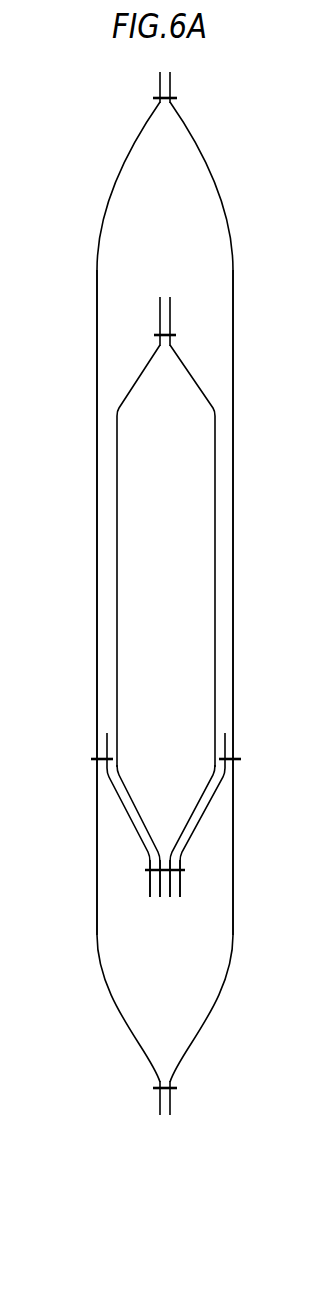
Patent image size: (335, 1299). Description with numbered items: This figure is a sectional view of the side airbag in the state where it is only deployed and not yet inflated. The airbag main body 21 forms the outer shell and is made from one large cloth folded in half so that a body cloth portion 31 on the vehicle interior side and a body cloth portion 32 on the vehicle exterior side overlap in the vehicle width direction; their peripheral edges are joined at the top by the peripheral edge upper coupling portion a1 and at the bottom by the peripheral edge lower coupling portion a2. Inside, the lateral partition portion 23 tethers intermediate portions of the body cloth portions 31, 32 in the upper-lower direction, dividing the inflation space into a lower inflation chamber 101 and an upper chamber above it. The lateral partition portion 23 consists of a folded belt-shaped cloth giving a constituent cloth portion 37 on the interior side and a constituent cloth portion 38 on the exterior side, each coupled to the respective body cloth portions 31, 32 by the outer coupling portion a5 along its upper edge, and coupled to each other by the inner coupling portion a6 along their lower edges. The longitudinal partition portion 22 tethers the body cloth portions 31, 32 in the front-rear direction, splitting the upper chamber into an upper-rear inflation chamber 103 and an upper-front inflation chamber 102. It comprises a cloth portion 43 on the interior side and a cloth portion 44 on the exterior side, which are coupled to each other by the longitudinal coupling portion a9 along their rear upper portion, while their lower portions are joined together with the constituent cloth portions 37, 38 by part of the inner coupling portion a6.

The peripheral edge upper coupling portion a1 is at (155, 98).
The peripheral edge lower coupling portion a2 is at (155, 1090).
The outer coupling portion a5 is at (95, 759).
The inner coupling portion a6 is at (147, 873).
The longitudinal coupling portion a9 is at (157, 334).
The airbag main body 21 is at (121, 162).
The longitudinal partition portion 22 is at (115, 443).
The lateral partition portion 23 is at (138, 832).
The body cloth portion 31 is at (100, 223).
The body cloth portion 32 is at (229, 208).
The constituent cloth portion 37 is at (123, 805).
The constituent cloth portion 38 is at (205, 813).
The cloth portion 43 is at (117, 518).
The cloth portion 44 is at (215, 518).
The lower inflation chamber 101 is at (182, 994).
The upper-front inflation chamber 102 is at (180, 598).
The upper-rear inflation chamber 103 is at (177, 224).